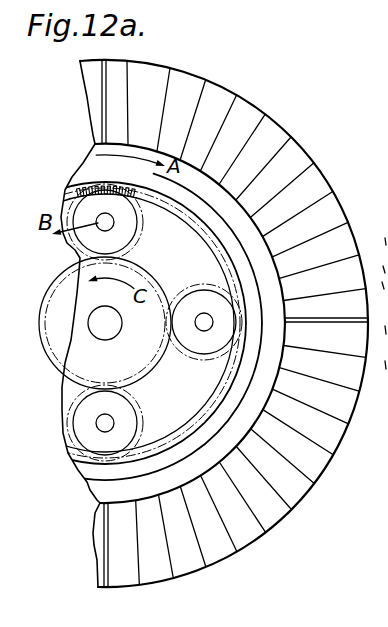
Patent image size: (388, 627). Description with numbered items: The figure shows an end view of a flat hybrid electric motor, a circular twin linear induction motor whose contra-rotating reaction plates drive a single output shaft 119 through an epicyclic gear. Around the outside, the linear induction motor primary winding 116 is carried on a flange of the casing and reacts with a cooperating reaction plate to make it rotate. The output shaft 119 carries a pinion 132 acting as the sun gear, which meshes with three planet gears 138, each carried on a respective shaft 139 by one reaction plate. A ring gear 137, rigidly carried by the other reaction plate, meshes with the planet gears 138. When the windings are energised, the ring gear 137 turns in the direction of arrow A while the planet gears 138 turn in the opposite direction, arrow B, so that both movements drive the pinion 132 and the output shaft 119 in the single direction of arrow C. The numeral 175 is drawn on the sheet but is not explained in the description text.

The fan impeller 116 is at (327, 480).
The shroud ring 137 is at (203, 207).
The planet gear 138 is at (133, 418).
The planet gear pin 139 is at (205, 313).
The planet carrier 132 is at (150, 359).
The shaft 119 is at (118, 335).
The housing 175 is at (350, 626).